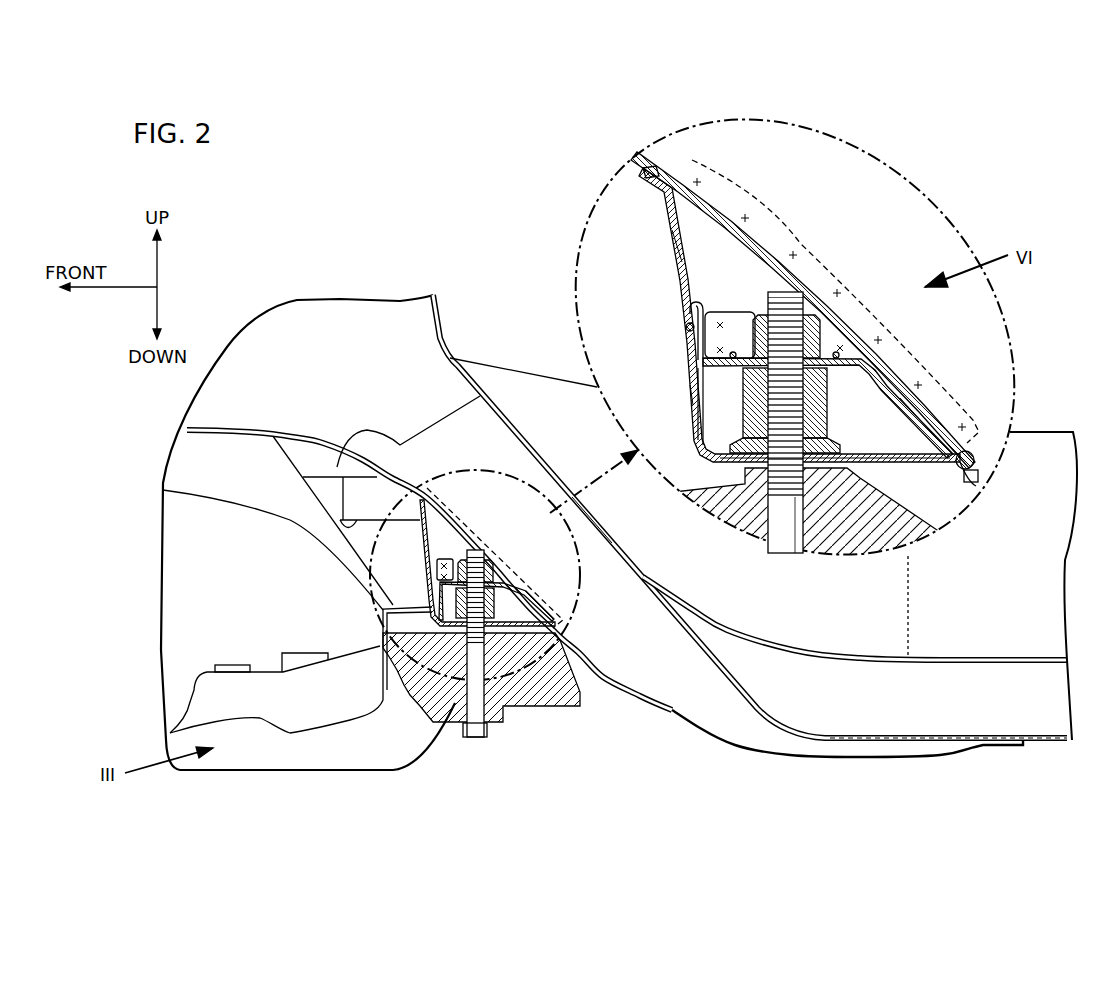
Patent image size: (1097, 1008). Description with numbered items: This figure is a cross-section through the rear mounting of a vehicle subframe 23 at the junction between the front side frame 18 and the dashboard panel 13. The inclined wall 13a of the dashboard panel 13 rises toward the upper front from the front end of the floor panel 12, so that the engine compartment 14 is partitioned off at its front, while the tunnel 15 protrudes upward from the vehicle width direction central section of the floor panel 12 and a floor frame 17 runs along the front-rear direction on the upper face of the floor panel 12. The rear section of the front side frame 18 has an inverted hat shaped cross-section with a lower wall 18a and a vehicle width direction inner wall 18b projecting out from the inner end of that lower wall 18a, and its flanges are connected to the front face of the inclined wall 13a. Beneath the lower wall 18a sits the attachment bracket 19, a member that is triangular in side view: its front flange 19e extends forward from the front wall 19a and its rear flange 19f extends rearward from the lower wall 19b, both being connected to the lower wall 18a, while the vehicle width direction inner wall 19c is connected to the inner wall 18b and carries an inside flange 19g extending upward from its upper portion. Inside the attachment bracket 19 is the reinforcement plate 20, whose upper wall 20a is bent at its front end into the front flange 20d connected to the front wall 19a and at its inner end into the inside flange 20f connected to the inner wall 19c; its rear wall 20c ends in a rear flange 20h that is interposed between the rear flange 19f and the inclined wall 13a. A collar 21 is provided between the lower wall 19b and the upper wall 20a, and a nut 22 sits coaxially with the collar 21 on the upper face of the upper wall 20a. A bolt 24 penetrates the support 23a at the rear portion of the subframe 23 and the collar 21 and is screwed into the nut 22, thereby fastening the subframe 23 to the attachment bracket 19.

The floor panel 12 is at (1043, 745).
The dashboard panel 13 is at (510, 412).
The inclined wall 13a is at (593, 512).
The engine compartment 14 is at (211, 560).
The tunnel 15 is at (1050, 432).
The floor frame 17 is at (850, 650).
The front side frame 18 is at (343, 457).
The lower wall 18a is at (458, 492).
The vehicle width direction inner wall 18b is at (517, 460).
The attachment bracket 19 is at (420, 551).
The front wall 19a is at (424, 538).
The lower wall 19b is at (560, 647).
The vehicle width direction inner wall 19c is at (453, 538).
The front flange 19e is at (644, 175).
The rear flange 19f is at (960, 484).
The inside flange 19g is at (583, 596).
The reinforcement plate 20 is at (383, 620).
The upper wall 20a is at (708, 378).
The rear wall 20c is at (921, 424).
The front flange 20d is at (700, 303).
The inside flange 20f is at (730, 315).
The rear flange 20h is at (980, 484).
The collar 21 is at (492, 603).
The nut 22 is at (487, 573).
The subframe 23 is at (263, 667).
The support 23a is at (450, 705).
The bolt 24 is at (480, 738).